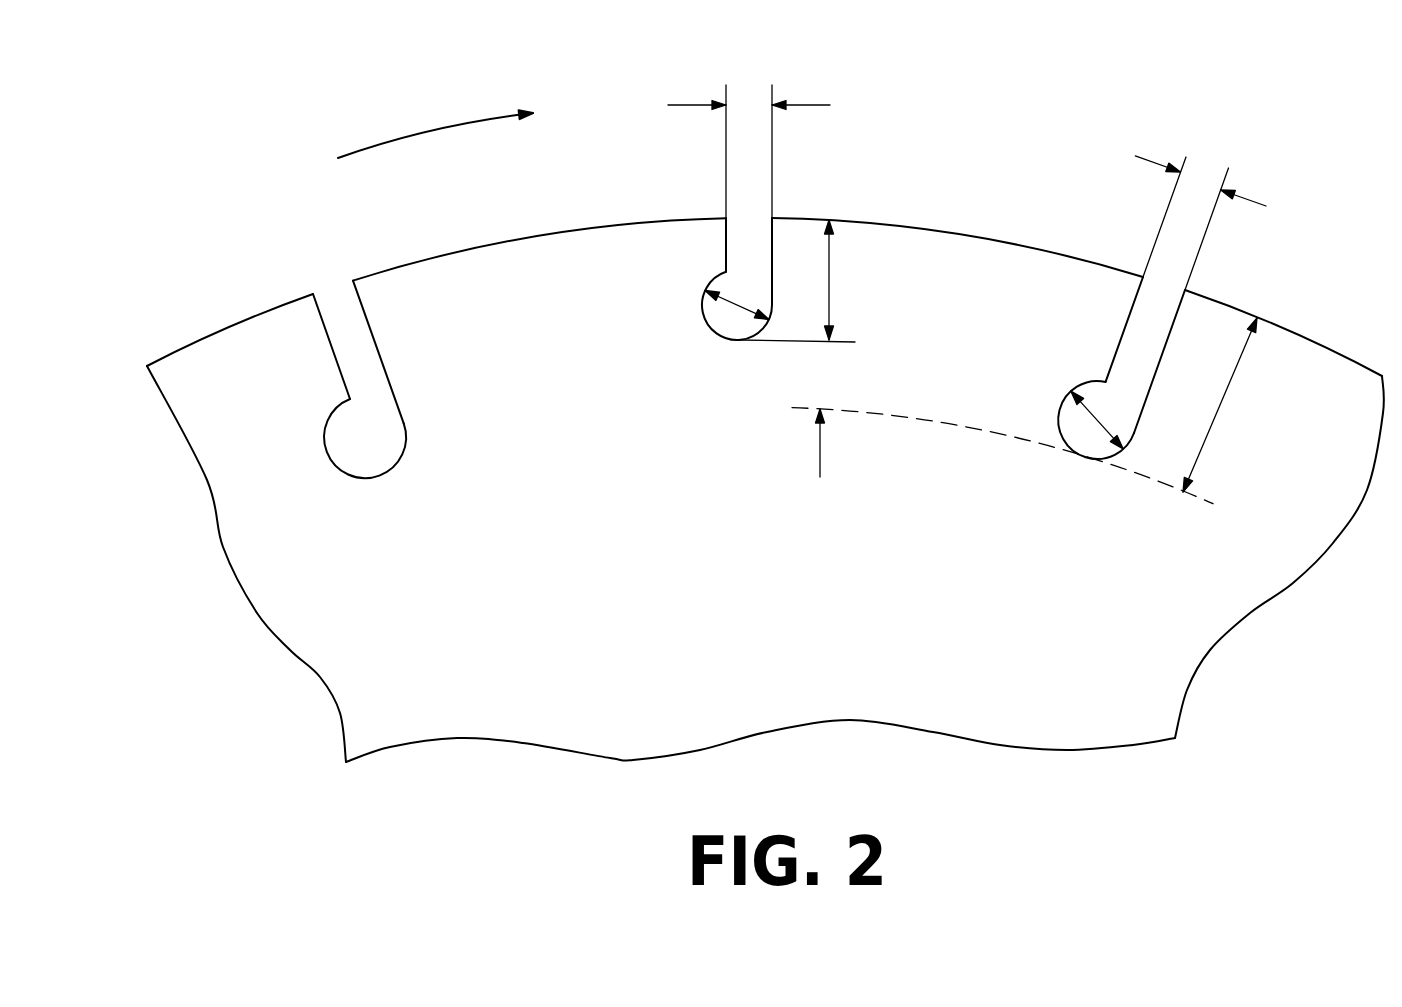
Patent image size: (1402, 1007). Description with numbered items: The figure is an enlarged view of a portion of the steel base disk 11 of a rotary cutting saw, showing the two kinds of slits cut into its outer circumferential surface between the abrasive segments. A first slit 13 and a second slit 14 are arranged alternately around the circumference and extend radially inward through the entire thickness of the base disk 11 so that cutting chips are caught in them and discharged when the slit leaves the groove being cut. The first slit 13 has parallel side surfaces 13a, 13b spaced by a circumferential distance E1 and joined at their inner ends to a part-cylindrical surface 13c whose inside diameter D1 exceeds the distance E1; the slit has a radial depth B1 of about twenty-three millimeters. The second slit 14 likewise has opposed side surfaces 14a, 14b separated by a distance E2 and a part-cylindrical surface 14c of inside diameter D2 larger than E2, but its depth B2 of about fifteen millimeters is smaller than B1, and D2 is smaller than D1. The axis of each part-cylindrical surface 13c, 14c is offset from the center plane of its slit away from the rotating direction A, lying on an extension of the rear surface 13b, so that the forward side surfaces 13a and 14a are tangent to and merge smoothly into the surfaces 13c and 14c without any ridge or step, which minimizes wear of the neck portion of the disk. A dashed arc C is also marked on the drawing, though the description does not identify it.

The base disk 11 is at (252, 347).
The first slit 13 is at (1152, 298).
The forward side surface of the first slit 13a is at (1172, 310).
The rear side surface of the first slit 13b is at (1125, 330).
The part-cylindrical surface of the first slit 13c is at (1092, 442).
The second slit 14 is at (743, 232).
The forward side surface of the second slit 14a is at (772, 236).
The rear side surface of the second slit 14b is at (718, 243).
The part-cylindrical surface of the second slit 14c is at (717, 317).
The rotating direction A is at (435, 123).
The depth of the first slit B1 is at (1223, 392).
The depth of the second slit B2 is at (830, 277).
The reference circle C is at (827, 370).
The inside diameter of the part-cylindrical surface of the first slit D1 is at (1097, 420).
The inside diameter of the part-cylindrical surface of the second slit D2 is at (740, 307).
The circumferential distance between side surfaces of the first slit E1 is at (1195, 180).
The circumferential distance between side surfaces of the second slit E2 is at (743, 102).